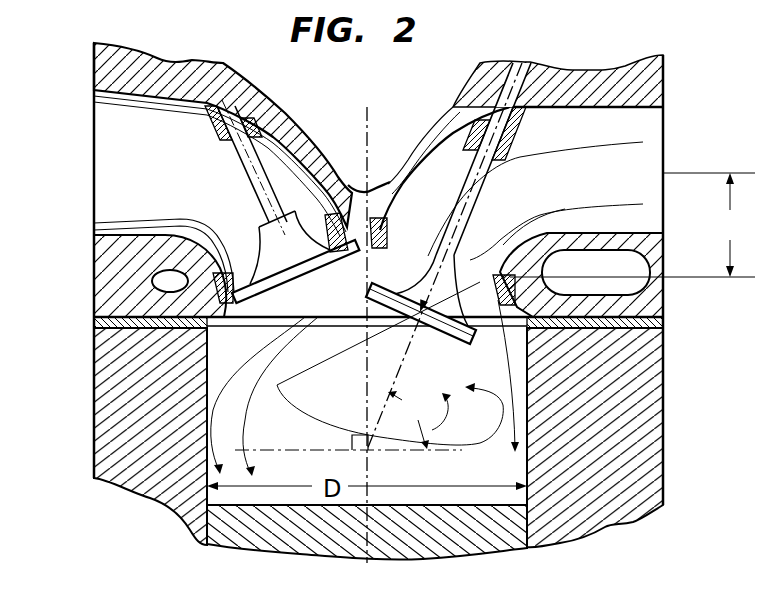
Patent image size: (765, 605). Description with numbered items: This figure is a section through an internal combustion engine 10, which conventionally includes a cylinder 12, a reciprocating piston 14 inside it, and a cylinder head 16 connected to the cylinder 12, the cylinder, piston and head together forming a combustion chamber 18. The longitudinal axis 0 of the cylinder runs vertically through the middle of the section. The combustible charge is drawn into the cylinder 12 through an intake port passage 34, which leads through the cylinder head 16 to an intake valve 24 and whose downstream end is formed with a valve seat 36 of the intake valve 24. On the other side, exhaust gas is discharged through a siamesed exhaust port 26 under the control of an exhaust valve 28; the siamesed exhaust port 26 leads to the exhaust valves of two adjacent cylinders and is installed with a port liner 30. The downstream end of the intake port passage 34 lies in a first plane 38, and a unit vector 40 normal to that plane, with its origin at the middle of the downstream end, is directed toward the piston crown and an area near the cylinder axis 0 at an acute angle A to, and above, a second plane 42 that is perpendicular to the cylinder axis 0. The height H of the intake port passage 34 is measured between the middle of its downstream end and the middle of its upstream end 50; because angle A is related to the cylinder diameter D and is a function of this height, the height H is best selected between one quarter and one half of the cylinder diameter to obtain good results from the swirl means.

The internal combustion engine 10 is at (668, 438).
The cylinder 12 is at (528, 430).
The reciprocating piston 14 is at (493, 550).
The cylinder head 16 is at (118, 271).
The combustion chamber 18 is at (339, 401).
The intake valve 24 is at (468, 334).
The siamesed exhaust port 26 is at (148, 118).
The exhaust valve 28 is at (267, 240).
The port liner 30 is at (172, 217).
The intake port passage 34 is at (563, 123).
The valve seat 36 is at (360, 267).
The first plane 38 is at (563, 330).
The unit vector 40 is at (460, 244).
The second plane 42 is at (452, 443).
The upstream end 50 is at (663, 173).
The longitudinal axis 0 is at (372, 132).